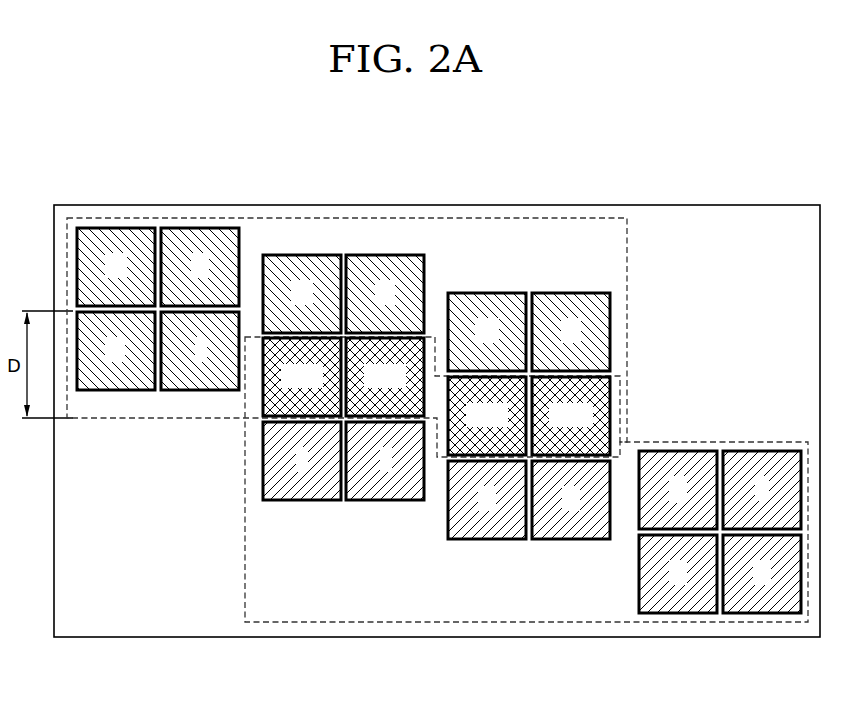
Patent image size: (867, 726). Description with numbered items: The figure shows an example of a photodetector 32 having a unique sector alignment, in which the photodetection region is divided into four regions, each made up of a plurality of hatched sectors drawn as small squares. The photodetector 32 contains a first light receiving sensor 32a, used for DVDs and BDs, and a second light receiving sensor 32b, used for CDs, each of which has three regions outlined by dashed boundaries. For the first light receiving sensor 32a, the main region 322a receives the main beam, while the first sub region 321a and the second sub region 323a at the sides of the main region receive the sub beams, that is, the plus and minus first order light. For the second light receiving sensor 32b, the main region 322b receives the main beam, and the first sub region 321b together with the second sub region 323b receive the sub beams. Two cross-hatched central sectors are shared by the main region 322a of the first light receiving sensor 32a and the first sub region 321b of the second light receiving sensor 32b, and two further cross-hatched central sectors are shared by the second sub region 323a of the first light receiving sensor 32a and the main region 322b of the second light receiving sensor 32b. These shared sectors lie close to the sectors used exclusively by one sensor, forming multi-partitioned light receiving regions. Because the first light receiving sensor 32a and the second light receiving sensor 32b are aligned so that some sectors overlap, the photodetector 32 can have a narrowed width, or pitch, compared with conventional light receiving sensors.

The photodetector 32 is at (738, 205).
The first light receiving sensor 32a is at (627, 316).
The second light receiving sensor 32b is at (245, 516).
The first sub region 321a is at (158, 218).
The main region 322a is at (358, 236).
The second sub region 323a is at (531, 270).
The first sub region 321b is at (343, 520).
The main region 322b is at (530, 560).
The second sub region 323b is at (718, 624).